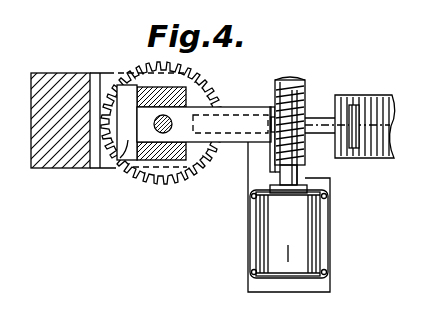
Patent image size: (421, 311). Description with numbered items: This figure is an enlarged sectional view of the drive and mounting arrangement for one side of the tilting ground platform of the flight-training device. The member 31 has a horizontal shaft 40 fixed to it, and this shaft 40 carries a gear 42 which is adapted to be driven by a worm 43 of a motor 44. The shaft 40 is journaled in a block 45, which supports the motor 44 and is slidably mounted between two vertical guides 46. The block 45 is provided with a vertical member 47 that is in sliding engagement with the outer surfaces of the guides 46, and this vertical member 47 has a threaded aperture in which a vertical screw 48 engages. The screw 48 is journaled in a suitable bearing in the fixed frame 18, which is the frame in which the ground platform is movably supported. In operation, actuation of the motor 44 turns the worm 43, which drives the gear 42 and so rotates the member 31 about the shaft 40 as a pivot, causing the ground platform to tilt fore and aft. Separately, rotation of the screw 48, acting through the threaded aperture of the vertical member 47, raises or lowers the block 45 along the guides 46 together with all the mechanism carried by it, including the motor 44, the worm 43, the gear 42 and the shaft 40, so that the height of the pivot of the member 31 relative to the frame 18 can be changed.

The fixed frame 18 is at (55, 68).
The member 31 is at (373, 102).
The horizontal shaft 40 is at (316, 117).
The gear 42 is at (284, 90).
The worm 43 is at (303, 178).
The motor 44 is at (268, 218).
The block 45 is at (233, 111).
The vertical guides 46 is at (152, 92).
The vertical member 47 is at (117, 161).
The vertical screw 48 is at (128, 166).